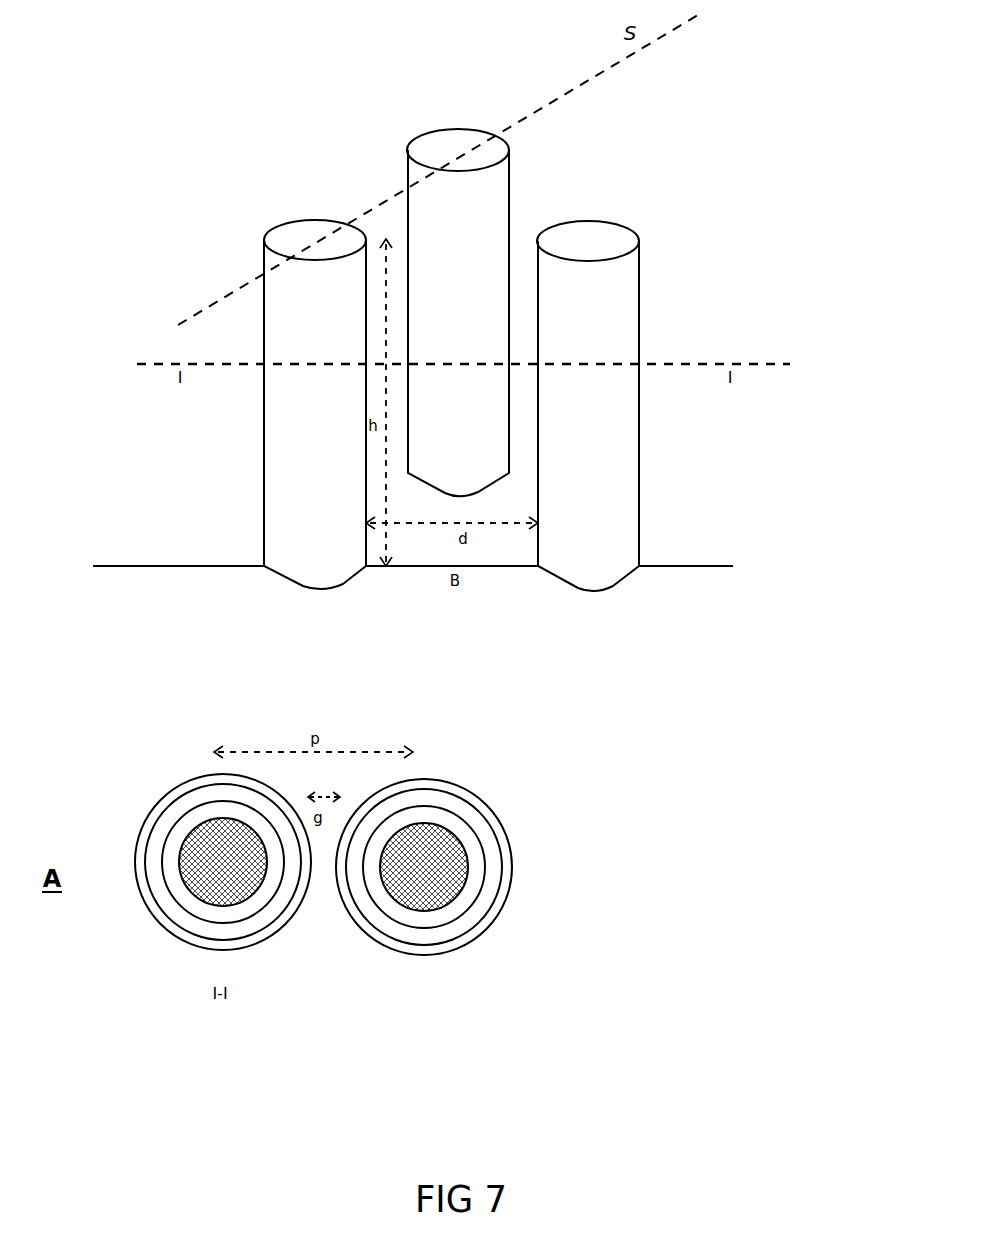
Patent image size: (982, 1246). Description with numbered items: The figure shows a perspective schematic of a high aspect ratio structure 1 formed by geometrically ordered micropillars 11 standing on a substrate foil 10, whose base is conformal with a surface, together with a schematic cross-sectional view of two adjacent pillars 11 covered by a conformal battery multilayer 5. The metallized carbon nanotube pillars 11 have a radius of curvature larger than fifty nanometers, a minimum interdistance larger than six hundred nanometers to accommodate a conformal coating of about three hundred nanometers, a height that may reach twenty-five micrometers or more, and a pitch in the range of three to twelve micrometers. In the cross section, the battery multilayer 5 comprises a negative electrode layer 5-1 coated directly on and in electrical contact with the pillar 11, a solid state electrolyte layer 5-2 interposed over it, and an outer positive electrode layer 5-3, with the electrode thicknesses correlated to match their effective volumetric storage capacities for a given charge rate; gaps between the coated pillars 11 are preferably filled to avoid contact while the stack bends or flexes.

The high aspect ratio structure 1 is at (700, 440).
The substrate foil 10 is at (174, 631).
The pillars 11 is at (439, 881).
The battery multilayer 5 is at (505, 862).
The negative electrode layer 5-1 is at (445, 820).
The solid state electrolyte layer 5-2 is at (495, 847).
The positive electrode layer 5-3 is at (508, 882).